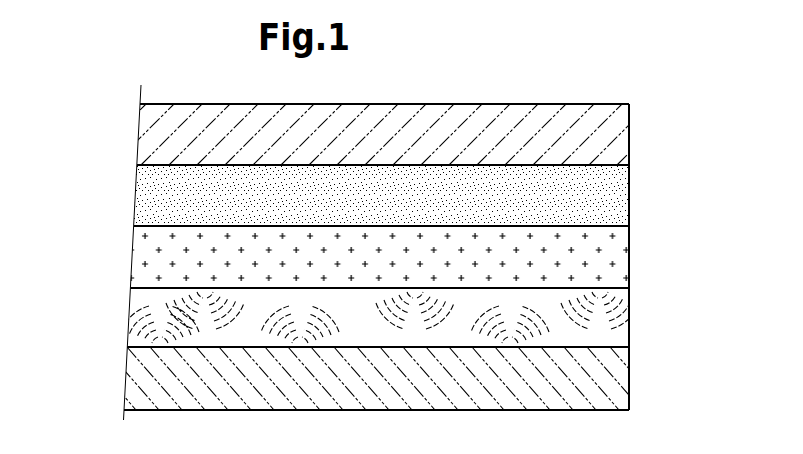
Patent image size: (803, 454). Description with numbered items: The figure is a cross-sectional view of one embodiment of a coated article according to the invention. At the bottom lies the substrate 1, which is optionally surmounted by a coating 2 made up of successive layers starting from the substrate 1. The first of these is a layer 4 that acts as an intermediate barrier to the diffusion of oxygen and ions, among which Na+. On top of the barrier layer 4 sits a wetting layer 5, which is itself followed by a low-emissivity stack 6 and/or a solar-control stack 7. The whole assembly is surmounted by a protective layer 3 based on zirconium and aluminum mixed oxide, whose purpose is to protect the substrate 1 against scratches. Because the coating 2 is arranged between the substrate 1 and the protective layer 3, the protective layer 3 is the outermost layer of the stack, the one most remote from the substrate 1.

The substrate 1 is at (629, 377).
The coating 2 is at (78, 164).
The protective layer 3 is at (629, 128).
The intermediate barrier layer 4 is at (629, 320).
The wetting layer 5 is at (629, 253).
The low-emissivity stack 6 is at (629, 190).
The solar-control stack 7 is at (629, 190).